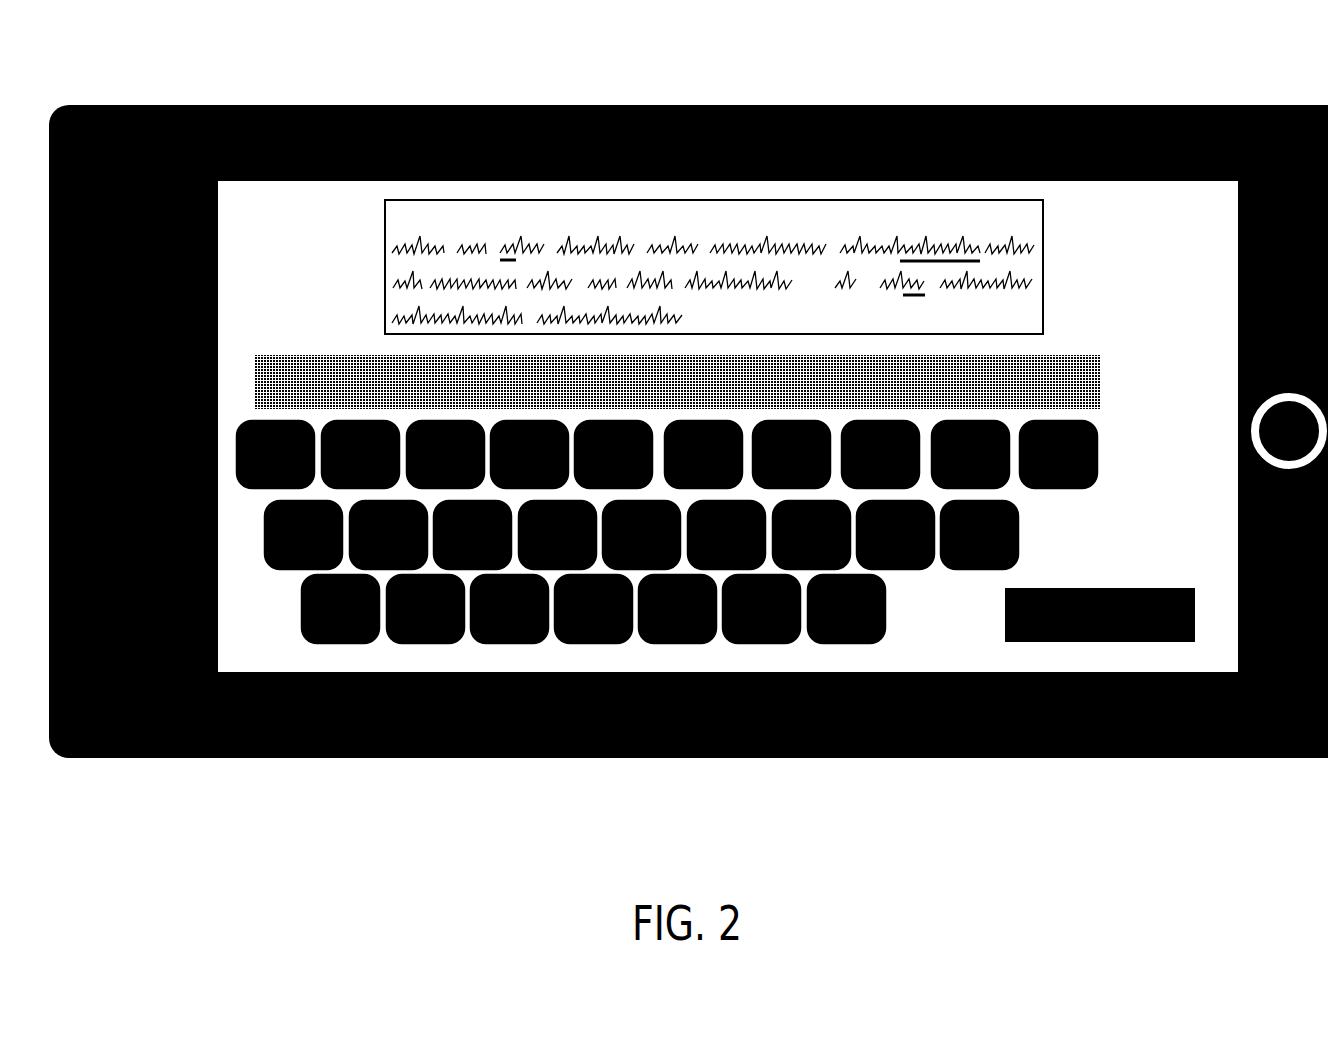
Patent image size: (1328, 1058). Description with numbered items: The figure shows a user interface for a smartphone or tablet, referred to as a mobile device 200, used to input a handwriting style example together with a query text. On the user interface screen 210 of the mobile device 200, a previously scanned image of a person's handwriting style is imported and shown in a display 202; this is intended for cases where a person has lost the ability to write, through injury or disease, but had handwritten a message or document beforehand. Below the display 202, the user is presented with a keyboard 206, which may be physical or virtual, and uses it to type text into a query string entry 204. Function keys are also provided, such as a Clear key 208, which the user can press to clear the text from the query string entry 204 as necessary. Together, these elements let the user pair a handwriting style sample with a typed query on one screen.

The mobile device 200 is at (638, 72).
The handwriting style display 202 is at (968, 200).
The query string entry 204 is at (1060, 355).
The keyboard 206 is at (930, 615).
The Clear key 208 is at (1135, 642).
The user interface screen 210 is at (292, 218).